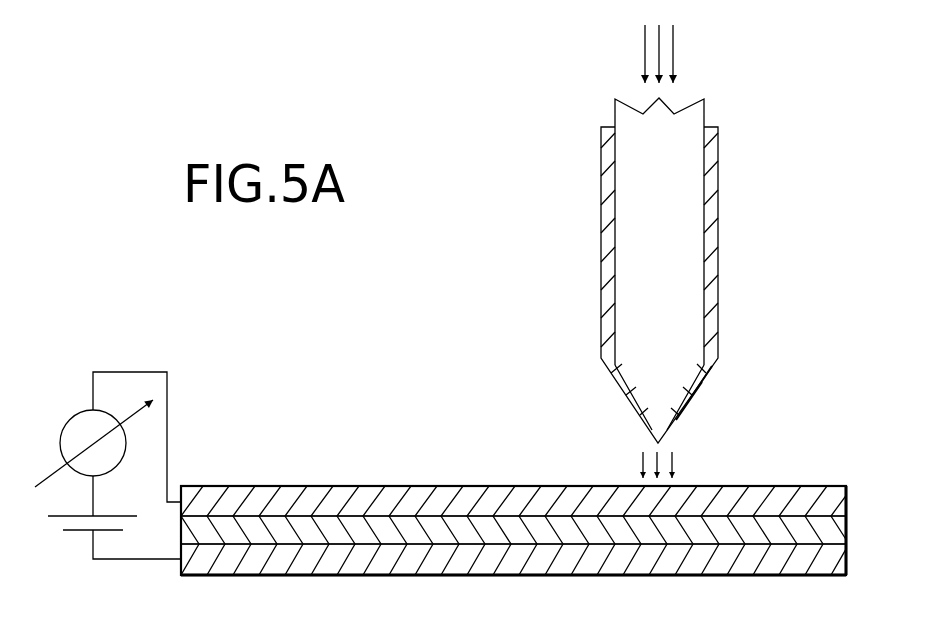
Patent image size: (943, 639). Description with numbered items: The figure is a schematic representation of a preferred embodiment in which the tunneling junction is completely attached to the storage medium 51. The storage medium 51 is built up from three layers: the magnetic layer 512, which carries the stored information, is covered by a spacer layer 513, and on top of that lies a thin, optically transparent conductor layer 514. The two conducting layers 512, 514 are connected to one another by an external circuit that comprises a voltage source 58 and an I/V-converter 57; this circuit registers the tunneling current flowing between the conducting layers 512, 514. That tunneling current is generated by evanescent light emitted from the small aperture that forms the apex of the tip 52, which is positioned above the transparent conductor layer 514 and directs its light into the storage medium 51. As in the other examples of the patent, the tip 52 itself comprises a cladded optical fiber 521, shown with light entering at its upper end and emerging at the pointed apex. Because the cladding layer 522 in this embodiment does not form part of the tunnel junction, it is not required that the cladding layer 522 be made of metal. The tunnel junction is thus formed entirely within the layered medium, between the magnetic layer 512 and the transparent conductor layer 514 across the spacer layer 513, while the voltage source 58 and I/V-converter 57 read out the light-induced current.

The recording medium 51 is at (383, 447).
The magnetic layer 512 is at (433, 573).
The spacer layer 513 is at (838, 532).
The optically transparent conductor layer 514 is at (760, 492).
The tip 52 is at (730, 187).
The cladded optical fiber 521 is at (687, 102).
The cladding layer 522 is at (715, 305).
The I/V-converter 57 is at (68, 420).
The voltage source 58 is at (78, 533).